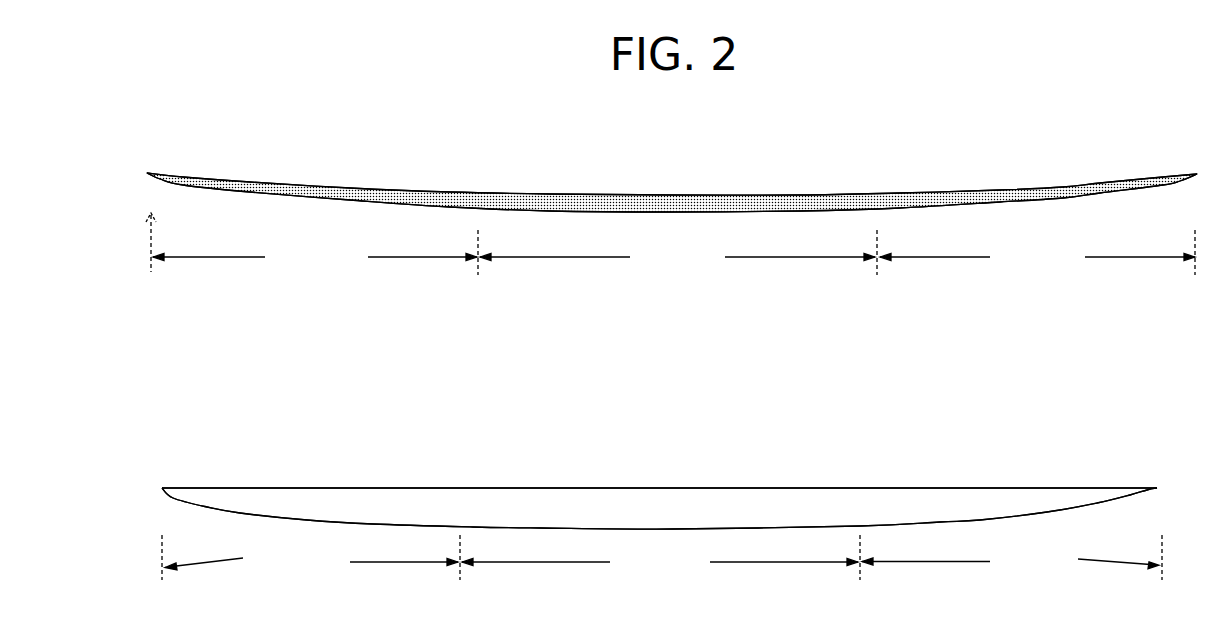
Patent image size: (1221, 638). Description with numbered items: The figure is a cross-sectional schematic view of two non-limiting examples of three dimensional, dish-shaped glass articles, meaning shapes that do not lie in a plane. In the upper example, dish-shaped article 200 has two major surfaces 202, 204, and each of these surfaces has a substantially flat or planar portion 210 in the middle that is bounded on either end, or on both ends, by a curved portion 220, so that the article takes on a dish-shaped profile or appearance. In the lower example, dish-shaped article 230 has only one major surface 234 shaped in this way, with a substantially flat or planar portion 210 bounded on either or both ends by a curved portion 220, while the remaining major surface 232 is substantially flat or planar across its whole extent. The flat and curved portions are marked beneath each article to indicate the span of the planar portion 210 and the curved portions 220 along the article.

The dish-shaped article 200 is at (657, 164).
The major surface 202 is at (672, 183).
The major surface 204 is at (672, 203).
The substantially flat or planar portion 210 is at (668, 416).
The curved portion 220 is at (670, 397).
The dish-shaped article 230 is at (703, 434).
The major surface 232 is at (659, 475).
The major surface 234 is at (659, 519).